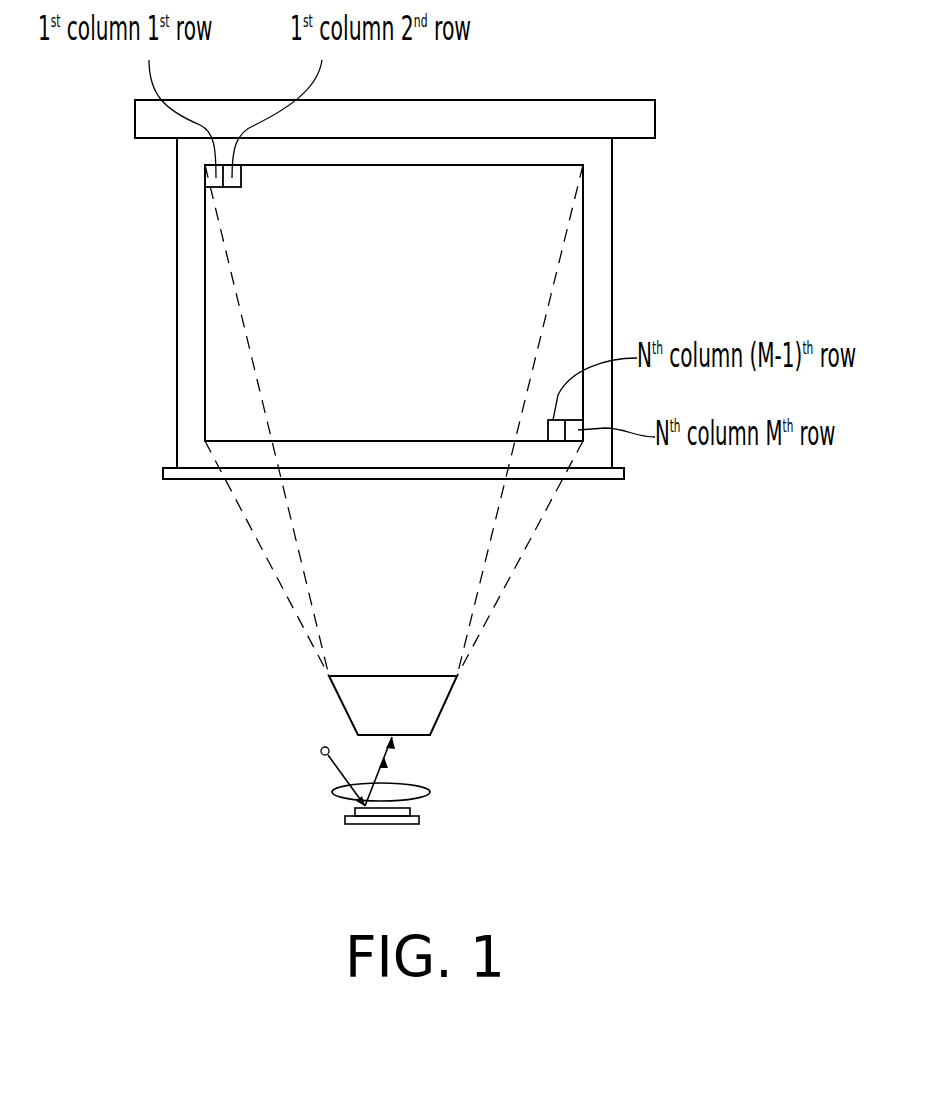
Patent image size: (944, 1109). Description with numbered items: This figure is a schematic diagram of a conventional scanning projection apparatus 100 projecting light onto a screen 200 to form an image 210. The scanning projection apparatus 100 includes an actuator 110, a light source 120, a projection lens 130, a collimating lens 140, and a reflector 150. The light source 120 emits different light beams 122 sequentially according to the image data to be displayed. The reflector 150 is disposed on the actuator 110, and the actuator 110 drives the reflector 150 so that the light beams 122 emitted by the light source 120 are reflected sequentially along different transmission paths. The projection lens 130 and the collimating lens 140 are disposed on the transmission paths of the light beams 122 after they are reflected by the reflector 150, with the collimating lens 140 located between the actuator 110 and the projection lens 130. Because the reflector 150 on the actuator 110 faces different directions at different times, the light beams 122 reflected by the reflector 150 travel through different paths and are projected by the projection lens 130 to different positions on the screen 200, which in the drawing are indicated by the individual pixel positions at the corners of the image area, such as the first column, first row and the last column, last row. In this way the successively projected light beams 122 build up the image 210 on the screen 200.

The scanning projection apparatus 100 is at (399, 780).
The actuator 110 is at (438, 850).
The light source 120 is at (330, 751).
The light beams 122 is at (338, 770).
The projection lens 130 is at (425, 710).
The collimating lens 140 is at (430, 793).
The reflector 150 is at (408, 811).
The screen 200 is at (612, 234).
The image 210 is at (586, 292).